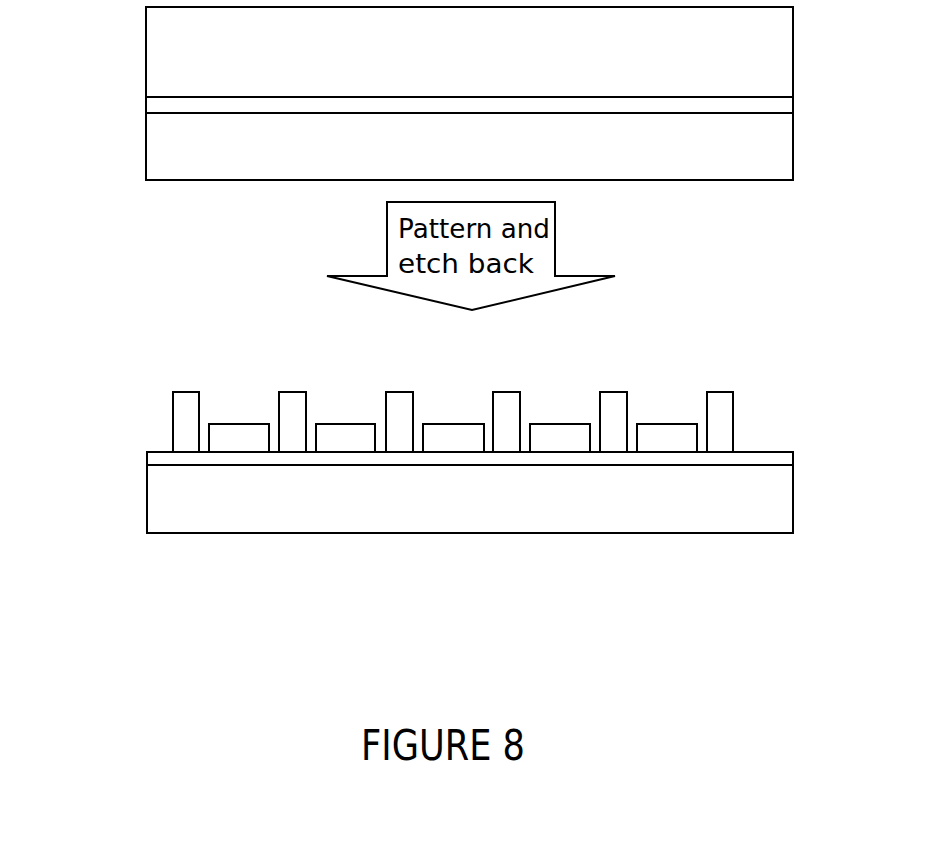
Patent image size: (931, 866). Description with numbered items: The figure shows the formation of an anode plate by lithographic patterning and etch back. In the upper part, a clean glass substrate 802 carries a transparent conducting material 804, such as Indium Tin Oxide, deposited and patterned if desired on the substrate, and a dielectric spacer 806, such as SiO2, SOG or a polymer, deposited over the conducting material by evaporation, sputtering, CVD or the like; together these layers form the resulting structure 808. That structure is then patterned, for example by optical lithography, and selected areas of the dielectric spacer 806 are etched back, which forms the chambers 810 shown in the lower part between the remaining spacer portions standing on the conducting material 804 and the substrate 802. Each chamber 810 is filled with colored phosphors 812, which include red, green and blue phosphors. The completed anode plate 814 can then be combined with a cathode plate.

The glass substrate 802 is at (793, 157).
The transparent conducting material 804 is at (793, 104).
The dielectric spacer 806 is at (793, 16).
The resulting structure 808 is at (129, 7).
The chambers 810 is at (234, 367).
The colored phosphors 812 is at (473, 424).
The anode plate 814 is at (97, 368).